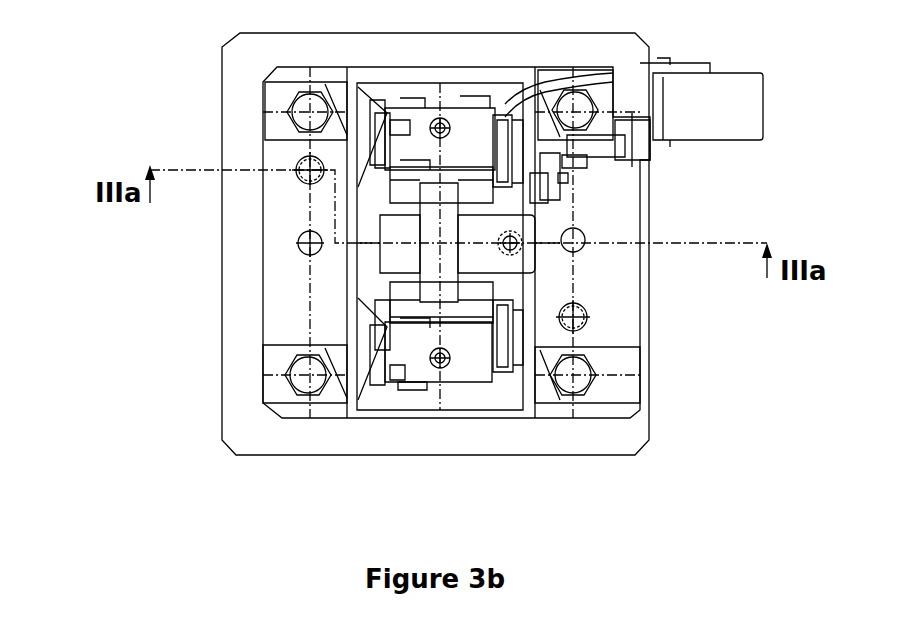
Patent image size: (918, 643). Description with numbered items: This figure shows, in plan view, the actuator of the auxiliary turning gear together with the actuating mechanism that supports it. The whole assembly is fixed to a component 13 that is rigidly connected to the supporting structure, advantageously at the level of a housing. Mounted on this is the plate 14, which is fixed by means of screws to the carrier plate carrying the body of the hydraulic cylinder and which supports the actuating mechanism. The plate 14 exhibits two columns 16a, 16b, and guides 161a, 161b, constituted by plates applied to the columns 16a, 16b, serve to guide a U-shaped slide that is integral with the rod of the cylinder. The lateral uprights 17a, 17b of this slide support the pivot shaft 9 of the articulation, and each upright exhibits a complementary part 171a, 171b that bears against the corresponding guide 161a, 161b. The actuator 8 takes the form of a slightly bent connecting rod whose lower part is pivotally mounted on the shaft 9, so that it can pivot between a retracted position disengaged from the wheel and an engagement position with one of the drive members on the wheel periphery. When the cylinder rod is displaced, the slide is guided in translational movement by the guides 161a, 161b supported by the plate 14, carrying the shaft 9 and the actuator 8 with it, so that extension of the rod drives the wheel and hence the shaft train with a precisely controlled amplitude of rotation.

The component 13 is at (236, 410).
The plate 14 is at (283, 330).
The actuator 8 is at (383, 253).
The shaft 9 is at (439, 242).
The column 16a is at (457, 373).
The column 16b is at (477, 127).
The lateral upright 17a is at (397, 302).
The lateral upright 17b is at (398, 190).
The guide 161a is at (503, 327).
The guide 161b is at (505, 145).
The complementary part 171a is at (493, 310).
The complementary part 171b is at (398, 167).